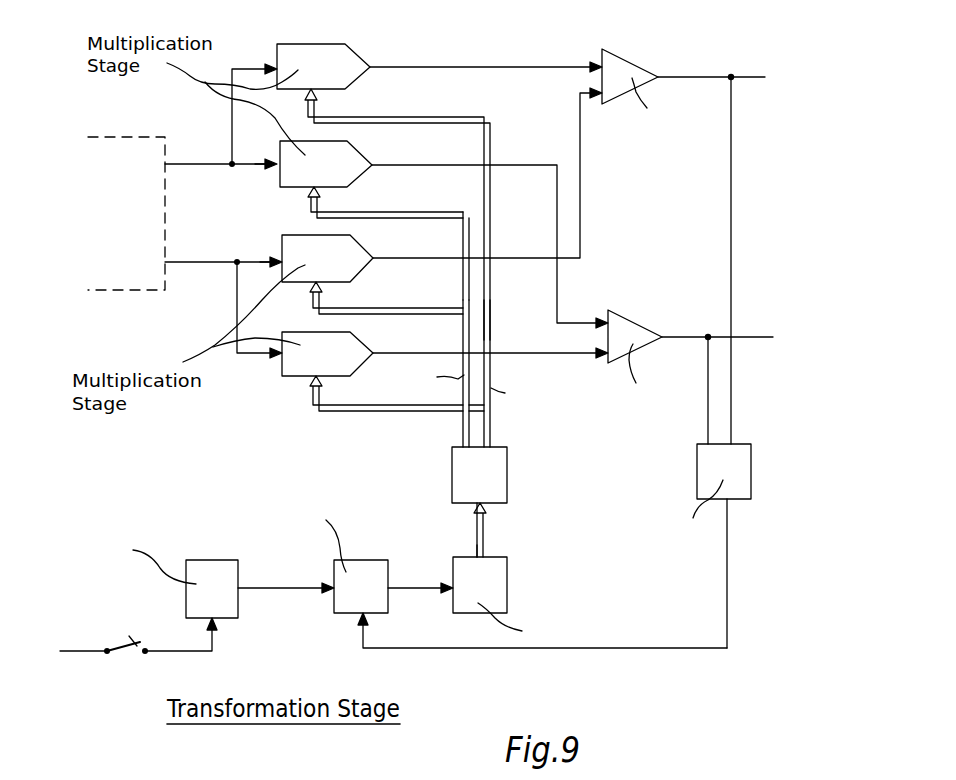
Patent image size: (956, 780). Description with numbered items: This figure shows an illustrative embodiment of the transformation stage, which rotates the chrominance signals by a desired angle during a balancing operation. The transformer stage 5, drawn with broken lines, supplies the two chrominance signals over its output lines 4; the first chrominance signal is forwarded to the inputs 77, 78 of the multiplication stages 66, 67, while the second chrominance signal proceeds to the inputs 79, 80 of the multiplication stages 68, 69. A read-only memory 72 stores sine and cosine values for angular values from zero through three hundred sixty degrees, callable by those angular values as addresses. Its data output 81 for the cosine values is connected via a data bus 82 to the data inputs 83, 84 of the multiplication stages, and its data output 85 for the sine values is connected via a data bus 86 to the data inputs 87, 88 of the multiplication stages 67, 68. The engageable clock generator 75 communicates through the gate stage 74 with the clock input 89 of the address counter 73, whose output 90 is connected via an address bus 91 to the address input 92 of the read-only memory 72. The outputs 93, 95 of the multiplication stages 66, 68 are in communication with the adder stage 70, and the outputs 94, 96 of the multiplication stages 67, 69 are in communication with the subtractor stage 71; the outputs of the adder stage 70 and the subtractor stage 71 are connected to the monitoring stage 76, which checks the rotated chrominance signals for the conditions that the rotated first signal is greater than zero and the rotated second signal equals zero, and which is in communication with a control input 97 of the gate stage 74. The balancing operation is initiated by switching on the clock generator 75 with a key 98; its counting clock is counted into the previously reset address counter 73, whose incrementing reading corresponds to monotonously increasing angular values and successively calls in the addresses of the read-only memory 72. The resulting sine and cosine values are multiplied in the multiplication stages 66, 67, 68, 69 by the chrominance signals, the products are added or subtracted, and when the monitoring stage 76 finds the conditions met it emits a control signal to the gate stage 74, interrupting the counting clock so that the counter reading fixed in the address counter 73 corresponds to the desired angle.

The transformer stage output lines 4 is at (210, 257).
The transformer stage 5 is at (136, 283).
The multiplication stage 66 is at (316, 50).
The multiplication stage 67 is at (348, 174).
The multiplication stage 68 is at (349, 270).
The multiplication stage 69 is at (350, 364).
The adder stage 70 is at (633, 63).
The subtractor stage 71 is at (634, 325).
The read-only memory 72 is at (497, 482).
The address counter 73 is at (502, 582).
The gate stage 74 is at (365, 570).
The clock generator 75 is at (214, 575).
The monitoring stage 76 is at (700, 489).
The input 77 is at (276, 64).
The input 78 is at (279, 161).
The input 79 is at (282, 268).
The input 80 is at (282, 360).
The data output 81 is at (493, 442).
The data bus 82 is at (490, 332).
The data input 83 is at (318, 91).
The data input 84 is at (312, 385).
The data output 85 is at (464, 442).
The data bus 86 is at (433, 216).
The data input 87 is at (309, 190).
The data input 88 is at (312, 290).
The clock input 89 is at (452, 576).
The output 90 is at (486, 557).
The address bus 91 is at (484, 536).
The address input 92 is at (469, 508).
The output 93 is at (362, 63).
The output 94 is at (372, 166).
The output 95 is at (373, 259).
The output 96 is at (374, 353).
The control input 97 is at (359, 622).
The key 98 is at (113, 644).